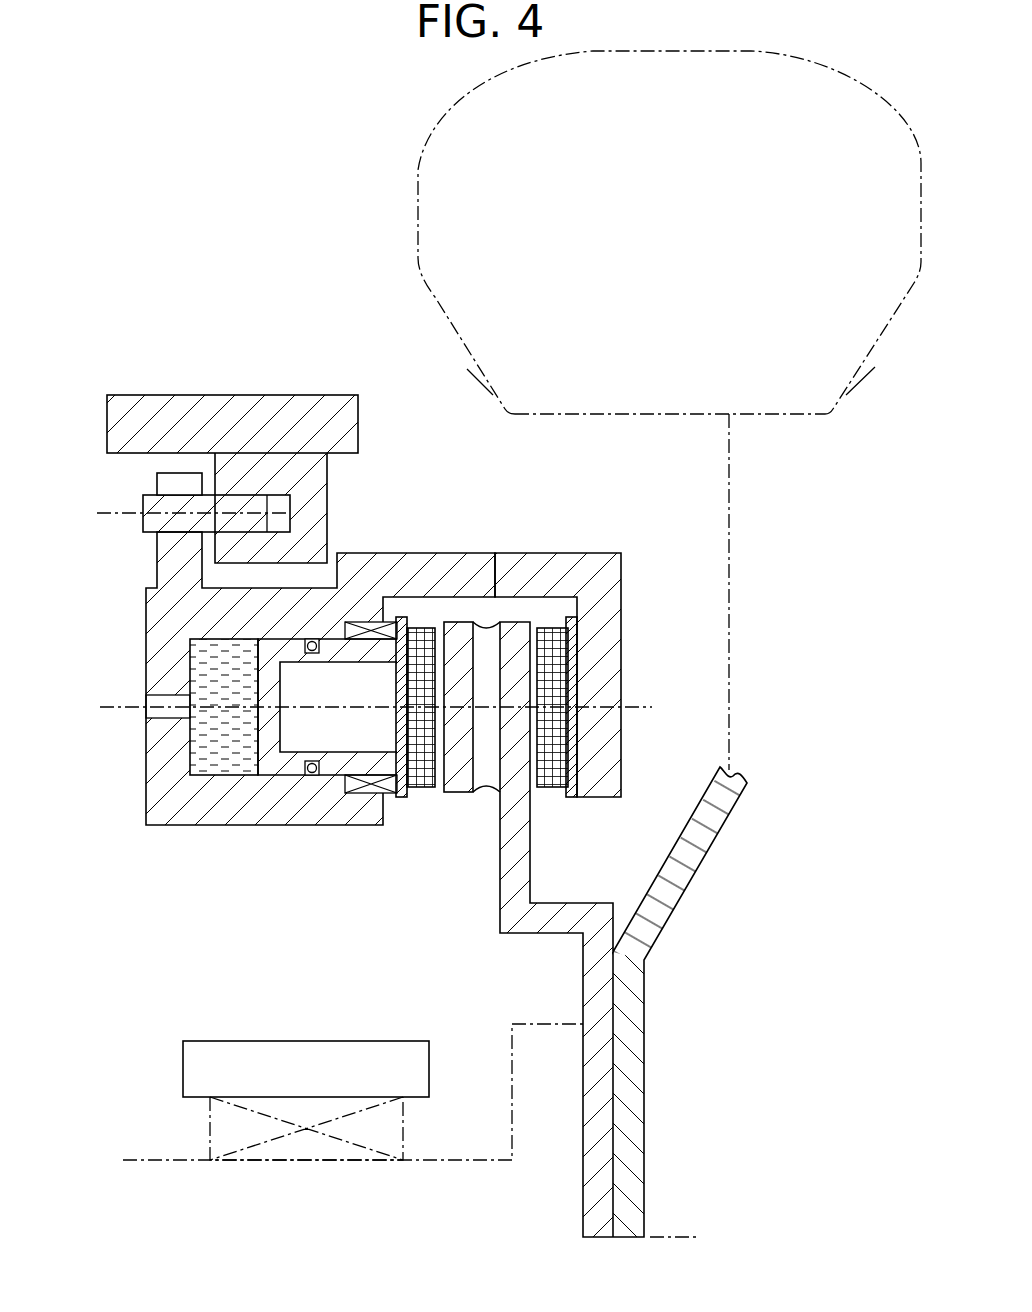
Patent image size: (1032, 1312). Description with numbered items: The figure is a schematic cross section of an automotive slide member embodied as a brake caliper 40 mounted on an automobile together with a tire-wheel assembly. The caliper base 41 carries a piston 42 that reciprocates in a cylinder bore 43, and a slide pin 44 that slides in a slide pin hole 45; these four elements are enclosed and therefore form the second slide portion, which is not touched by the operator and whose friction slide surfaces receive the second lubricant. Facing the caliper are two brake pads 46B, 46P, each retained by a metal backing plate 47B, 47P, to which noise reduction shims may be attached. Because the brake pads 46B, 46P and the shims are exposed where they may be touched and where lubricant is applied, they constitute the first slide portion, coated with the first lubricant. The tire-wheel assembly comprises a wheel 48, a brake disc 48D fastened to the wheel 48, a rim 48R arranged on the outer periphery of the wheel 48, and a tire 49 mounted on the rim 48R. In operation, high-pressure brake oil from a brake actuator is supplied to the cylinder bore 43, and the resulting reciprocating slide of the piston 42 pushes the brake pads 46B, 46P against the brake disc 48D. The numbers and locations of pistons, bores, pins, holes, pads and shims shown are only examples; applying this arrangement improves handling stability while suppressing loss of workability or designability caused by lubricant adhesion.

The brake caliper 40 is at (132, 293).
The caliper base 41 is at (540, 553).
The piston 42 is at (255, 732).
The cylinder bore 43 is at (208, 776).
The slide pin 44 is at (177, 497).
The slide pin hole 45 is at (275, 503).
The brake pad 46P is at (423, 805).
The metal backing plate 47P is at (402, 797).
The brake pad 46B is at (561, 612).
The metal backing plate 47B is at (573, 658).
The wheel 48 is at (644, 1059).
The brake disc 48D is at (595, 1200).
The rim 48R is at (803, 414).
The tire 49 is at (418, 207).